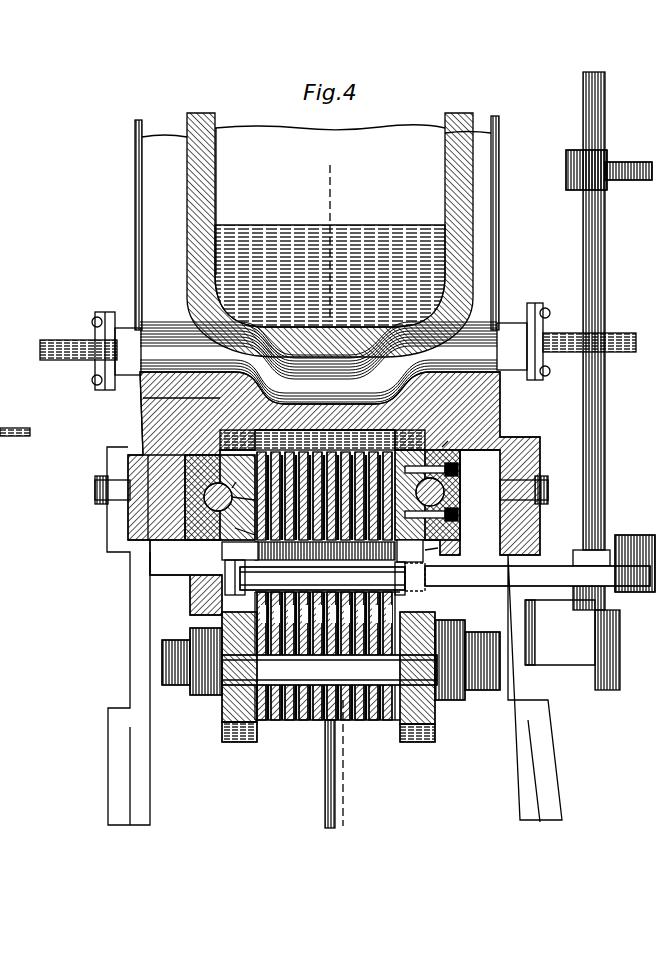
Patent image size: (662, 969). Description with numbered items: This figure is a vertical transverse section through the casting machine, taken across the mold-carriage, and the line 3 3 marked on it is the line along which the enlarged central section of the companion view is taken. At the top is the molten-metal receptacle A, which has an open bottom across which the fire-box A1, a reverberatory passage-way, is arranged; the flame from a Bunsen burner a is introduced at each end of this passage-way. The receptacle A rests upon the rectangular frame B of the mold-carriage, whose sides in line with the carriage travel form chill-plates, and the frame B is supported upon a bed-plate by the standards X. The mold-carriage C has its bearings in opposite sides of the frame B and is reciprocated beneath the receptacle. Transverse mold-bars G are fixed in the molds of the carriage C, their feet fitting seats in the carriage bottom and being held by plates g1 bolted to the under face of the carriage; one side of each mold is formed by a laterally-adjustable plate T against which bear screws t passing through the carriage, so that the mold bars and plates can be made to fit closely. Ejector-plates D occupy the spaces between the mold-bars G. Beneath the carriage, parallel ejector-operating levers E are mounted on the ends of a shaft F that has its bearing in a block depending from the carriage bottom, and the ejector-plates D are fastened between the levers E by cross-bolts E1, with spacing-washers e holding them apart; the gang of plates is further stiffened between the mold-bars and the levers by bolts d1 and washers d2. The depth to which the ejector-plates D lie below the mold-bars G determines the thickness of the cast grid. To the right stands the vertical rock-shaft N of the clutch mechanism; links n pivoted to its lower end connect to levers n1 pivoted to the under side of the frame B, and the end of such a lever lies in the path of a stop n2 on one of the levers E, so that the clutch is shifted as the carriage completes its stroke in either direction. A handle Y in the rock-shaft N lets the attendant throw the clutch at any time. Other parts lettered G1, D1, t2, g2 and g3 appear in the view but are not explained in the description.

The section line 3 3 is at (336, 495).
The molten-metal receptacle A is at (330, 235).
The fire-box A1 is at (318, 362).
The Bunsen burner a is at (338, 346).
The rectangular frame of the mold-carriage B is at (515, 418).
The mold-carriage C is at (220, 497).
The plates g1 is at (239, 486).
The guide G1 is at (243, 506).
The plate D1 is at (245, 533).
The transverse mold-bars G is at (325, 506).
The screws t is at (427, 495).
The bolt head t2 is at (448, 442).
The bracket g2 is at (240, 551).
The laterally-adjustable plate T is at (410, 551).
The bracket g3 is at (437, 549).
The bolts d1 is at (322, 578).
The washers d2 is at (268, 578).
The ejector-plates D is at (300, 722).
The spacing-washers e is at (262, 722).
The cross-bolts E1 is at (329, 670).
The ejector-operating levers E is at (240, 744).
The shaft F is at (162, 665).
The levers n1 is at (537, 576).
The stop n2 is at (425, 578).
The links n is at (647, 535).
The vertical rock-shaft N is at (606, 428).
The handle Y is at (609, 176).
The standards X is at (130, 612).